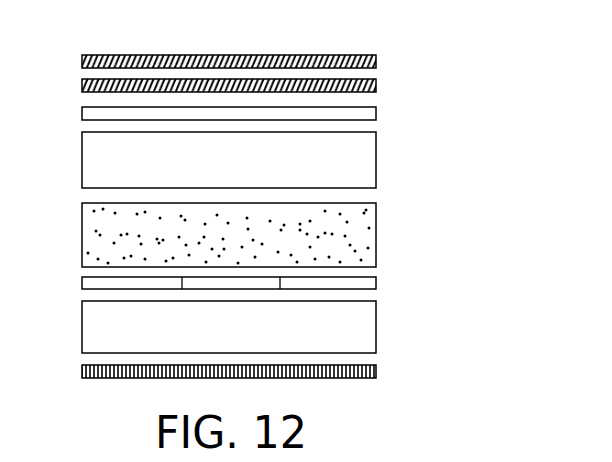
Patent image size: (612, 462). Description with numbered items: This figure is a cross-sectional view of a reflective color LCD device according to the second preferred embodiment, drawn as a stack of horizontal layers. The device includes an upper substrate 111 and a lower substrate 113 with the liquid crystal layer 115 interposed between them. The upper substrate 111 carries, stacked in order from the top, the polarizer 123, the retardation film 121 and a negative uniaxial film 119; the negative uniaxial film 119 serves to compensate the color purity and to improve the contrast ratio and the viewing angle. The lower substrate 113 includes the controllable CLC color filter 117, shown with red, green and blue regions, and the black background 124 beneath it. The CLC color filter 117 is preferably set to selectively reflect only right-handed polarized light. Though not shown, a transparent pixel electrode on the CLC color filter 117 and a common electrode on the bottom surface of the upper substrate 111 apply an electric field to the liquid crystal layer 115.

The polarizer 123 is at (376, 62).
The retardation film 121 is at (376, 89).
The negative uniaxial film 119 is at (376, 114).
The upper substrate 111 is at (375, 164).
The liquid crystal layer 115 is at (373, 236).
The CLC color filter 117 is at (376, 284).
The lower substrate 113 is at (375, 333).
The black background 124 is at (376, 371).